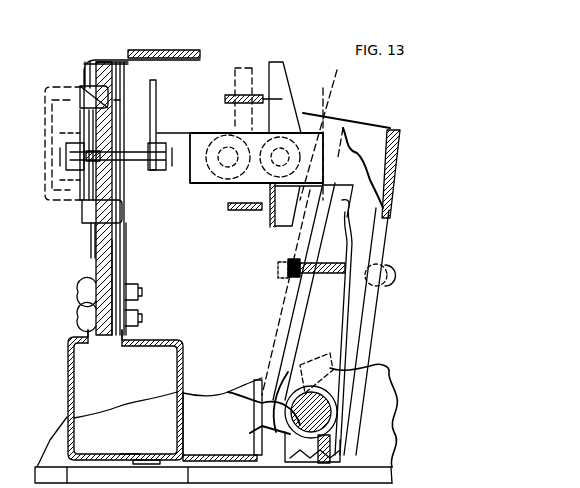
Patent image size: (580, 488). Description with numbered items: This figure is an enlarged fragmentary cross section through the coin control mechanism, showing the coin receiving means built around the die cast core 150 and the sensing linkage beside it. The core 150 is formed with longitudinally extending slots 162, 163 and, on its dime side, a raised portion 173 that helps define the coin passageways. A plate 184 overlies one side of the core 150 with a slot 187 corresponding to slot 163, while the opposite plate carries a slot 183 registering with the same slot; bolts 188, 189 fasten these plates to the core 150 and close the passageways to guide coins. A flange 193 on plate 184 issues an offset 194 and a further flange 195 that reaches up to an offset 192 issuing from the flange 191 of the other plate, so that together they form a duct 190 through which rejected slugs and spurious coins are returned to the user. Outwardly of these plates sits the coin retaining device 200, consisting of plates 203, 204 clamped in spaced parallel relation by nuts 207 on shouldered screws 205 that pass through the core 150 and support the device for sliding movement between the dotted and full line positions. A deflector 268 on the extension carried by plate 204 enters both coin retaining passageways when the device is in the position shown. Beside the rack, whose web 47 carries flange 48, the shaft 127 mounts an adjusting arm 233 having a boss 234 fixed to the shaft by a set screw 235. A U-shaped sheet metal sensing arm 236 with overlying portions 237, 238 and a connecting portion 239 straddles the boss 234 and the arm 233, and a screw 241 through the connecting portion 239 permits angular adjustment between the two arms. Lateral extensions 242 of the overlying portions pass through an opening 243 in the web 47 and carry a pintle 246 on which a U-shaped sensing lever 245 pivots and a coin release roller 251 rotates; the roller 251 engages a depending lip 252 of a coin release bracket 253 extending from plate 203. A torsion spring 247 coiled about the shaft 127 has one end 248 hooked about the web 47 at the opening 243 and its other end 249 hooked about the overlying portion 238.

The die cast core 150 is at (103, 58).
The flange 48 is at (165, 50).
The slot 162 is at (100, 106).
The coin retaining device 200 is at (95, 108).
The nuts 207 is at (70, 152).
The plate 204 is at (80, 187).
The plate 184 is at (88, 240).
The slot 163 is at (95, 258).
The bolt 188 is at (78, 292).
The bolt 189 is at (78, 317).
The duct 190 is at (88, 440).
The offset 194 is at (74, 398).
The flange 195 is at (127, 452).
The flange 193 is at (82, 345).
The flange 191 is at (153, 343).
The offset 192 is at (181, 354).
The deflector 268 is at (112, 212).
The slot 183 is at (127, 225).
The raised portion 173 is at (130, 271).
The slot 187 is at (120, 100).
The plate 203 is at (156, 120).
The coin release bracket 253 is at (198, 142).
The shouldered screw 205 is at (262, 185).
The sensing lever 245 is at (274, 228).
The coin release roller 251 is at (272, 70).
The pintle 246 is at (316, 125).
The lateral extensions 242 is at (331, 133).
The depending lip 252 is at (342, 132).
The overlying portion 237 is at (373, 125).
The sensing arm 236 is at (400, 131).
The connecting portion 239 is at (391, 178).
The overlying portion 238 is at (368, 218).
The spring end 249 is at (372, 246).
The screw 241 is at (394, 278).
The adjusting arm 233 is at (300, 305).
The web 47 is at (257, 380).
The boss 234 is at (264, 400).
The opening 243 is at (258, 413).
The spring end 248 is at (252, 432).
The shaft 127 is at (312, 418).
The torsion spring 247 is at (340, 423).
The set screw 235 is at (332, 466).